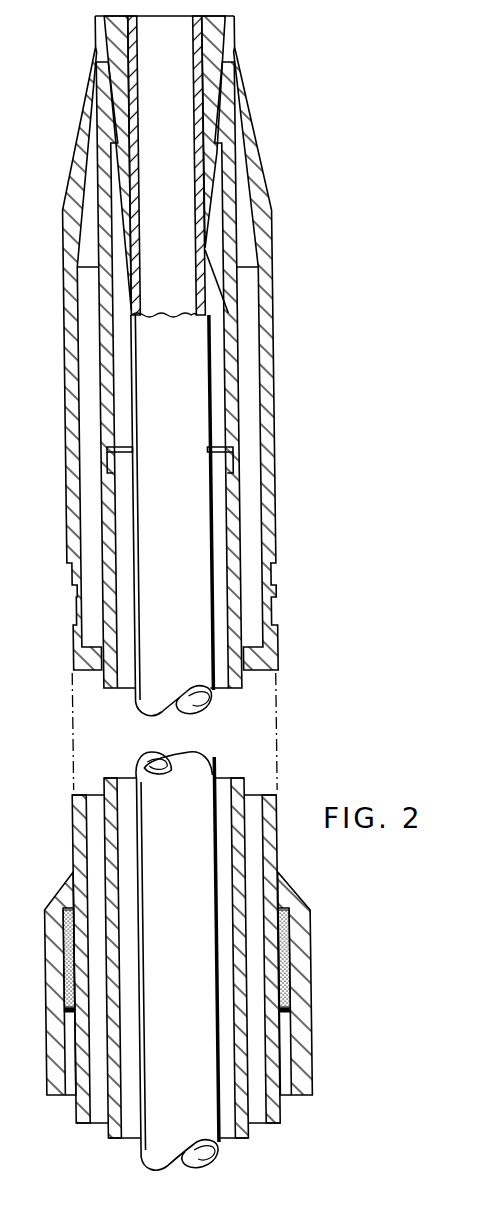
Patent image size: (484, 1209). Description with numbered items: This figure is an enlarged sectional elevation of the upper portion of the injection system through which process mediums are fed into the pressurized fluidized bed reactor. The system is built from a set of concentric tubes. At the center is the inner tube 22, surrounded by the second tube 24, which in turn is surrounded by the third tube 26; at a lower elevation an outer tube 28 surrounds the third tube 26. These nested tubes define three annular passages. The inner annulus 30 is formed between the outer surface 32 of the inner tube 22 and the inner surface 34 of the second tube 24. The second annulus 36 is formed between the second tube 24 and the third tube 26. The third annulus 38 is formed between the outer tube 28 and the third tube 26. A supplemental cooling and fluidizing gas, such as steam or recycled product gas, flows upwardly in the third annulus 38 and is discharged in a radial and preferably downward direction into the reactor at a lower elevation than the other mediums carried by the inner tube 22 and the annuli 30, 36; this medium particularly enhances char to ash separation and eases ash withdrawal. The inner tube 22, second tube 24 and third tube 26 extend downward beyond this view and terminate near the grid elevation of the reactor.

The inner tube 22 is at (188, 320).
The second tube 24 is at (233, 350).
The third tube 26 is at (265, 385).
The outer tube 28 is at (308, 913).
The inner annulus 30 is at (237, 395).
The outer surface 32 is at (205, 249).
The inner surface 34 is at (232, 512).
The second annulus 36 is at (250, 456).
The third annulus 38 is at (287, 1062).